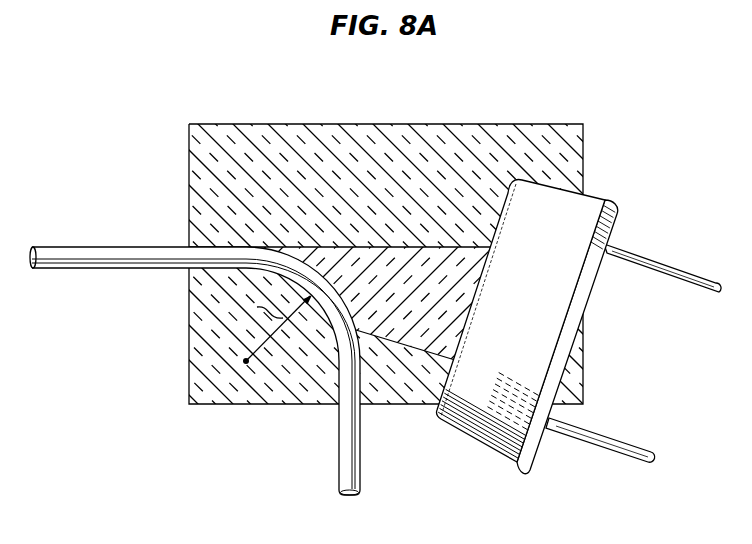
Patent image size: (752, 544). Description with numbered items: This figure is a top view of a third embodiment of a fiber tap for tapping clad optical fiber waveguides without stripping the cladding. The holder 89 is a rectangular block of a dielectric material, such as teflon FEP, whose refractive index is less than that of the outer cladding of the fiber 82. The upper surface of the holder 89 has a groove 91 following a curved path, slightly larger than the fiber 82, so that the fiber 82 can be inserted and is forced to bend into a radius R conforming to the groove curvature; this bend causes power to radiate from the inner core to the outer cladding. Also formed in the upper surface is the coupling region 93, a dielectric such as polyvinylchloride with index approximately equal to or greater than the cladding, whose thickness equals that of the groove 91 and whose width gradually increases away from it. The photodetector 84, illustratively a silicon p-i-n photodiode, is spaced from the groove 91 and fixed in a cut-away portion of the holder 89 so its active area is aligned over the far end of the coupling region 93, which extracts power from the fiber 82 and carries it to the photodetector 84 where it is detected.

The fiber 82 is at (195, 371).
The photodetector 84 is at (495, 448).
The holder 89 is at (583, 161).
The groove 91 is at (337, 375).
The coupling region 93 is at (382, 262).